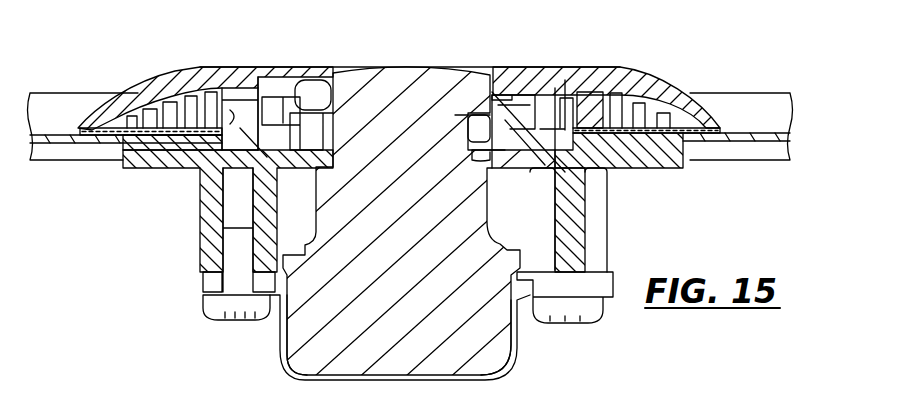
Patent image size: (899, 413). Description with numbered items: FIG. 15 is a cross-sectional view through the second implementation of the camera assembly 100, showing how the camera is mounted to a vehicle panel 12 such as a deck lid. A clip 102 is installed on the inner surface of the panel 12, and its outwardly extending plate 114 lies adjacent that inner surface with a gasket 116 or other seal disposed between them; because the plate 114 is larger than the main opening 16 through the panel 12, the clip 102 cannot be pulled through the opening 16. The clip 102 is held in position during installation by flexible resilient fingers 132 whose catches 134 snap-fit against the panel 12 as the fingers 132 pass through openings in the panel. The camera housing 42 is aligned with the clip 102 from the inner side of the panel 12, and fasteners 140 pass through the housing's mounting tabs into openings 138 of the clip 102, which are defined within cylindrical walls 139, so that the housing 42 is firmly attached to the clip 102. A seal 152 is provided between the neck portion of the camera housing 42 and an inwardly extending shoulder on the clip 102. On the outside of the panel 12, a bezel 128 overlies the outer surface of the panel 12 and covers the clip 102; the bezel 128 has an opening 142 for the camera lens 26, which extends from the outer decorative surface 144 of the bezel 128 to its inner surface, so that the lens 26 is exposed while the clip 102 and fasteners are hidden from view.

The panel 12 is at (800, 125).
The opening 16 is at (582, 131).
The camera lens 26 is at (392, 70).
The camera housing 42 is at (423, 380).
The camera assembly 100 is at (273, 360).
The clip 102 is at (157, 170).
The plate 114 is at (637, 170).
The gasket 116 is at (128, 143).
The bezel 128 is at (150, 83).
The flexible resilient fingers 132 is at (230, 147).
The catches 134 is at (222, 105).
The openings 138 is at (232, 200).
The cylindrical walls 139 is at (203, 252).
The fasteners 140 is at (213, 303).
The opening 142 is at (490, 83).
The outer decorative surface 144 is at (515, 70).
The seal 152 is at (327, 120).